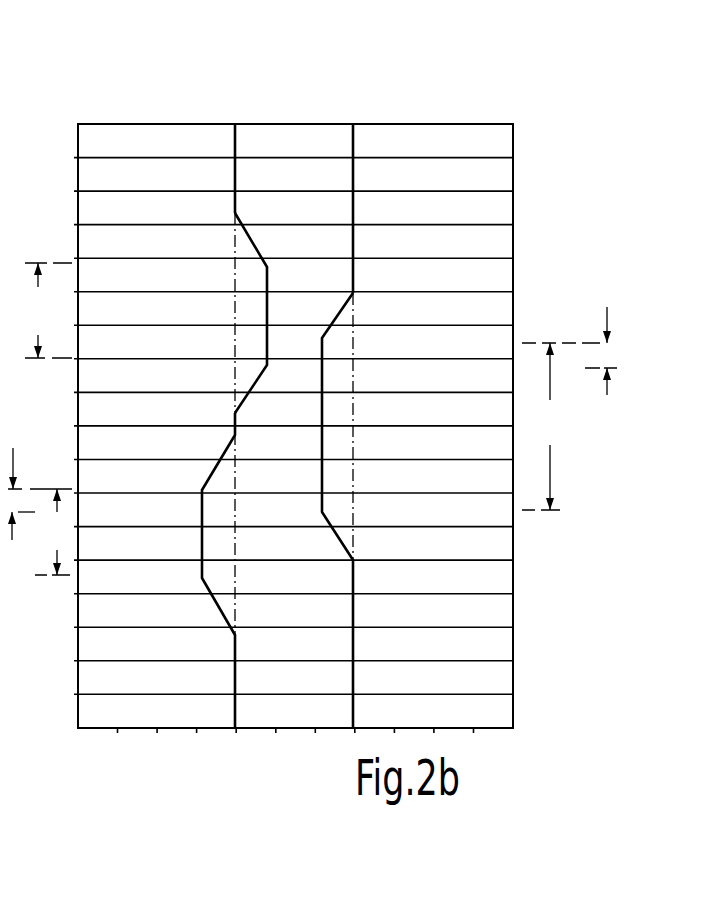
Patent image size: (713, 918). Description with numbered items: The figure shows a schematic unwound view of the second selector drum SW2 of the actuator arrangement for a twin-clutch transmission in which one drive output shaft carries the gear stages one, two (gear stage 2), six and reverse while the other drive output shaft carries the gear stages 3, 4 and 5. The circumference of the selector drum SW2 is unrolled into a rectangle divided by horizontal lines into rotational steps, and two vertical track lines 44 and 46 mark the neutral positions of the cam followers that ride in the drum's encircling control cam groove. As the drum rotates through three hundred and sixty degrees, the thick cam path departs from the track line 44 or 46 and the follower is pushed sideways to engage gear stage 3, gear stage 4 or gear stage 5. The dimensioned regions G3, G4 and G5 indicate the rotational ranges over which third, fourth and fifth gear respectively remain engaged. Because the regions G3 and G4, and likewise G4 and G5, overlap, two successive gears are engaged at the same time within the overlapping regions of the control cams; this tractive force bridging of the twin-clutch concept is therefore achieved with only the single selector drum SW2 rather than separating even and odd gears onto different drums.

The selector drum SW2 is at (482, 123).
The control cam track 44 is at (238, 146).
The control cam track 46 is at (340, 135).
The gear stage 2 is at (9, 389).
The gear stage 3 is at (204, 570).
The gear stage 4 is at (324, 510).
The gear stage 5 is at (258, 313).
The third gear engaged region G3 is at (42, 532).
The fourth gear engaged region G4 is at (561, 426).
The fifth gear engaged region G5 is at (48, 310).